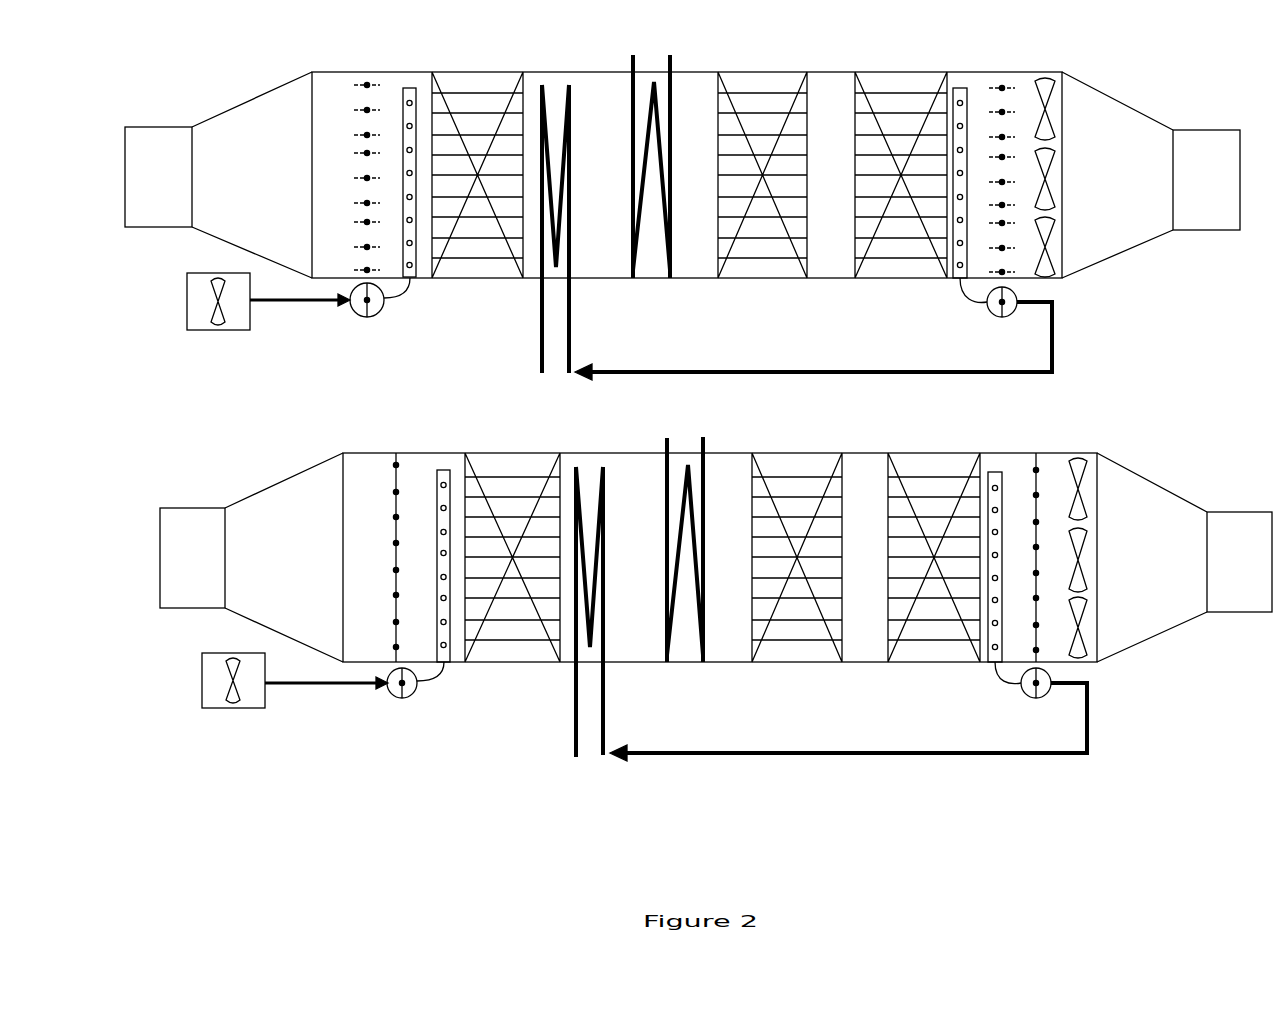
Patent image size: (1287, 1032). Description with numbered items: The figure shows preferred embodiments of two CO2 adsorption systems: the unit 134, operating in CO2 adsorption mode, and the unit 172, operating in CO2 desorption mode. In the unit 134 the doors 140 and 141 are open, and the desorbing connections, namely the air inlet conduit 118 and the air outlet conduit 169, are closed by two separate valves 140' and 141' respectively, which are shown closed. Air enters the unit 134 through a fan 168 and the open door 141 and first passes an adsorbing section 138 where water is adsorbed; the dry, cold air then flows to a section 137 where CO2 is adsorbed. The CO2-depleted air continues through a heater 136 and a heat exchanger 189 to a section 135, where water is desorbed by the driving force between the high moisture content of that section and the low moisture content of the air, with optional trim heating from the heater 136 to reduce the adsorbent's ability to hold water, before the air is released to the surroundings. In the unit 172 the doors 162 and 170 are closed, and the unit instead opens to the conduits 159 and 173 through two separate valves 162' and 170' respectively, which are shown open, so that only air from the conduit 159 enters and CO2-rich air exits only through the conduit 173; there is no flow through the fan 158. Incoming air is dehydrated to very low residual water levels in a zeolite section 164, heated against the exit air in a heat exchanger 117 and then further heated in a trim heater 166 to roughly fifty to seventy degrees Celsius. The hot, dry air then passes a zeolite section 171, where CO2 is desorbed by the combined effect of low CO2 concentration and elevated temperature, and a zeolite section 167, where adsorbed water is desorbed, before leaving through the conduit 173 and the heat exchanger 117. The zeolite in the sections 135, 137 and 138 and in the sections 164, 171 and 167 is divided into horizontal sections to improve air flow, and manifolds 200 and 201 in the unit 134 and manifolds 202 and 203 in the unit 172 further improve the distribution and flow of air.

The heat exchanger 117 is at (575, 710).
The conduit 118 is at (290, 302).
The unit 134 is at (1125, 255).
The section 135 is at (450, 72).
The heater 136 is at (635, 55).
The section 137 is at (768, 72).
The adsorbing section 138 is at (900, 72).
The door 140 is at (346, 155).
The valve 140' is at (380, 325).
The door 141 is at (1016, 151).
The valve 141' is at (962, 312).
The fan 158 is at (1080, 455).
The conduit 159 is at (290, 685).
The valve 162 is at (367, 537).
The valve 162' is at (398, 702).
The zeolite section 164 is at (520, 453).
The trim heater 166 is at (667, 445).
The zeolite section 167 is at (940, 453).
The fan 168 is at (1045, 75).
The conduit 169 is at (760, 372).
The valve 170 is at (1047, 535).
The valve 170' is at (1003, 698).
The zeolite section 171 is at (815, 453).
The unit 172 is at (1150, 630).
The conduit 173 is at (785, 753).
The heat exchanger 189 is at (569, 80).
The manifold 200 is at (410, 85).
The manifold 201 is at (960, 88).
The manifold 202 is at (444, 470).
The manifold 203 is at (995, 472).